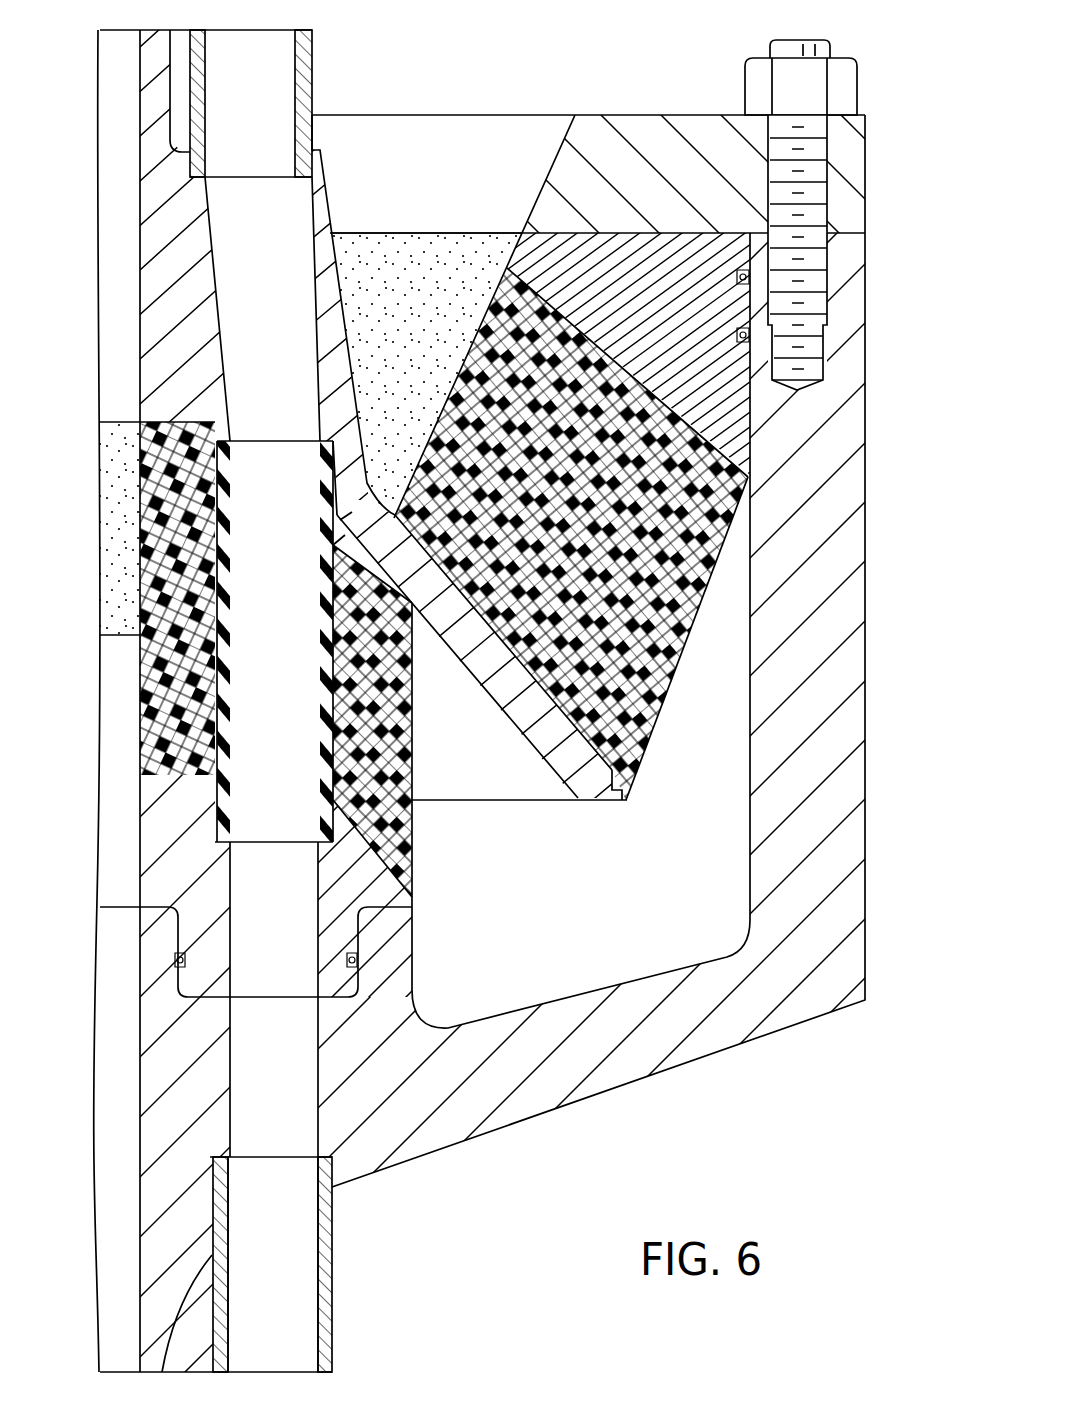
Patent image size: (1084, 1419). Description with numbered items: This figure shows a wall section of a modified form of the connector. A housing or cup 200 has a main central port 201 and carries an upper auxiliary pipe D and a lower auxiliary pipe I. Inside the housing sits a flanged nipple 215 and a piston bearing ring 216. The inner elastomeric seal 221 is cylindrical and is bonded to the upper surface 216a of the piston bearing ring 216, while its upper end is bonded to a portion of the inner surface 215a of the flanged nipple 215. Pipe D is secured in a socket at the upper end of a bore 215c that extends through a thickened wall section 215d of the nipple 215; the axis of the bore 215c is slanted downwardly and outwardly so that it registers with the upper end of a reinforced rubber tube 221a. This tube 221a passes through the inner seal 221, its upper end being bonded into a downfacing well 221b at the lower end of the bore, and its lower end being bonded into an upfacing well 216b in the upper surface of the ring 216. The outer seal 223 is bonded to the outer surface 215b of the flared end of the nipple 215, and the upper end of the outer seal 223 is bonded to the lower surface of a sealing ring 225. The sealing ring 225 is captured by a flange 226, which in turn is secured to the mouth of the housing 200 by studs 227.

The housing 200 is at (720, 1035).
The main central port 201 is at (140, 1214).
The flanged nipple 215 is at (122, 88).
The inner surface of the flanged nipple 215a is at (530, 728).
The outer surface of the flared end of nipple 215b is at (618, 775).
The bore 215c is at (282, 294).
The thickened wall section 215d is at (335, 280).
The piston bearing ring 216 is at (165, 835).
The upper surface of piston bearing ring 216a is at (168, 660).
The upfacing well 216b is at (225, 767).
The inner elastomeric seal 221 is at (416, 780).
The reinforced rubber tube 221a is at (335, 472).
The downfacing well 221b is at (350, 458).
The outer seal 223 is at (735, 558).
The sealing ring 225 is at (682, 325).
The flange 226 is at (668, 128).
The studs 227 is at (800, 50).
The upper auxiliary pipe D is at (258, 100).
The lower auxiliary pipe I is at (285, 1303).